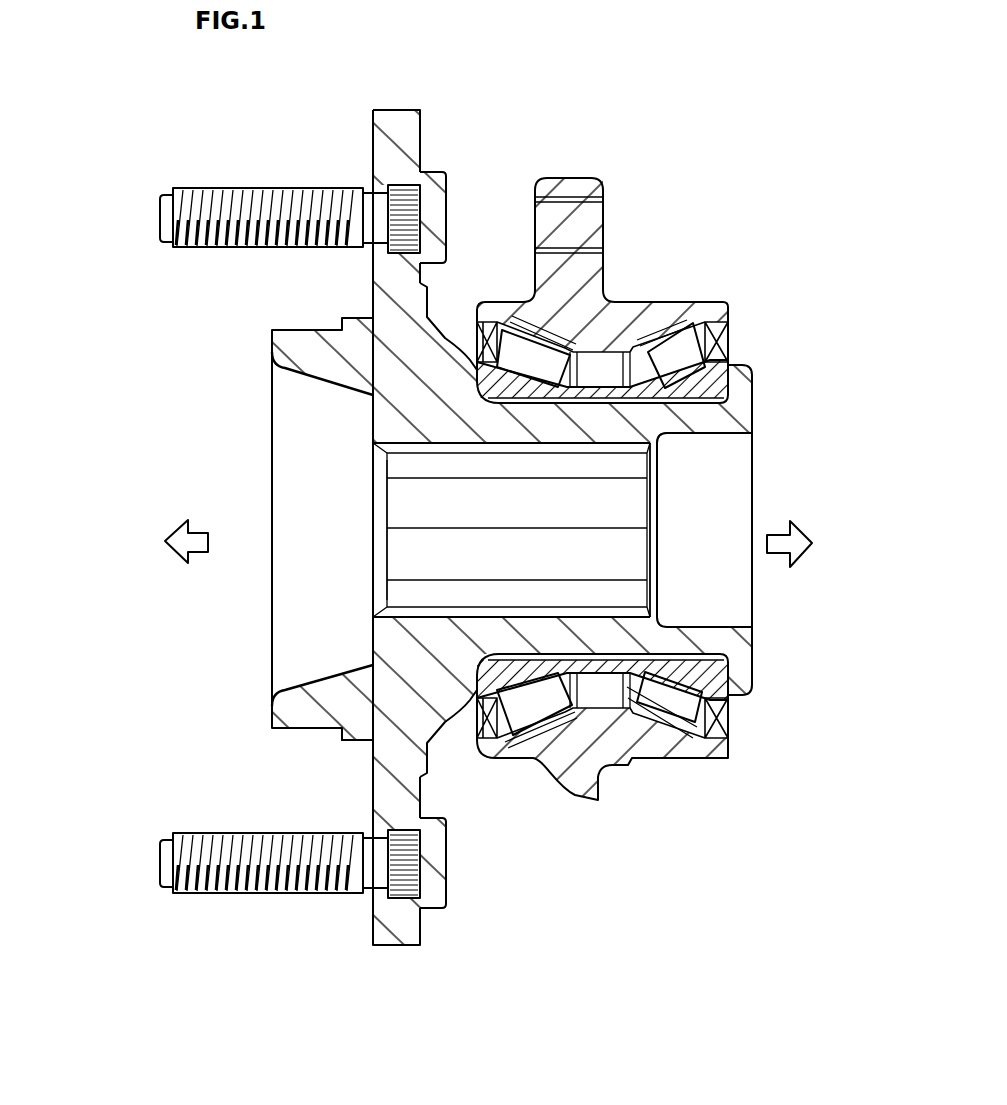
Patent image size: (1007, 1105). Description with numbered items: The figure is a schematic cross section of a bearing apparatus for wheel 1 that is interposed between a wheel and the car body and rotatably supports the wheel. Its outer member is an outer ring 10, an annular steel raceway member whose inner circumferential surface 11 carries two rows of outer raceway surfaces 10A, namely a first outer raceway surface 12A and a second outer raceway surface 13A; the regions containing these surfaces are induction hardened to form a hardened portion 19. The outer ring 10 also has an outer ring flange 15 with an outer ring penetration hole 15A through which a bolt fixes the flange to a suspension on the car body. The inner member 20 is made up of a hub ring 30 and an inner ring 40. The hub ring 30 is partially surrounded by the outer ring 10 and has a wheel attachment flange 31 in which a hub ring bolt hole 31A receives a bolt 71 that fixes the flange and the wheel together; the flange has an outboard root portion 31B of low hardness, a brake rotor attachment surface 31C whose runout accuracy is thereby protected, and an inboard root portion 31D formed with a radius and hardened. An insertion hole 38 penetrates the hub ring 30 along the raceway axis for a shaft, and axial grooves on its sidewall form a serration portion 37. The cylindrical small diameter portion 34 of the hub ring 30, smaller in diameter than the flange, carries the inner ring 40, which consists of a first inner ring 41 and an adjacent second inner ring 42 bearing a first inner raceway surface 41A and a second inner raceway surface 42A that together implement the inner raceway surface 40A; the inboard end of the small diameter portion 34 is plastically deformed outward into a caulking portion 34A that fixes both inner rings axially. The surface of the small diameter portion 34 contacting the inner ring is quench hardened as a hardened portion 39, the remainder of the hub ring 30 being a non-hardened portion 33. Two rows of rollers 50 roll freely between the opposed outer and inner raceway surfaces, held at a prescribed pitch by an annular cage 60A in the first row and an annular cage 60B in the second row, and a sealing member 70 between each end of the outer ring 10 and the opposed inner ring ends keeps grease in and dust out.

The bearing apparatus for wheel 1 is at (722, 200).
The outer ring 10 is at (713, 312).
The outer raceway surfaces 10A is at (607, 100).
The inner circumferential surface 11 is at (629, 300).
The first outer raceway surface 12A is at (566, 346).
The second outer raceway surface 13A is at (585, 348).
The outer ring flange 15 is at (571, 186).
The outer ring penetration hole 15A is at (603, 210).
The hardened portion 19 is at (548, 328).
The inner member 20 is at (178, 625).
The hub ring 30 is at (300, 712).
The wheel attachment flange 31 is at (397, 932).
The hub ring bolt hole 31A is at (422, 202).
The root portion 31B is at (373, 318).
The brake rotor attachment surface 31C is at (373, 128).
The root portion 31D is at (492, 742).
The non-hardened portion 33 is at (375, 712).
The small diameter portion 34 is at (565, 620).
The caulking portion 34A is at (735, 395).
The serration portion 37 is at (398, 540).
The insertion hole 38 is at (420, 445).
The hardened portion 39 is at (473, 356).
The inner ring 40 is at (221, 598).
The inner raceway surface 40A is at (803, 442).
The first inner ring 41 is at (480, 672).
The first inner raceway surface 41A is at (680, 458).
The second inner ring 42 is at (380, 622).
The second inner raceway surface 42A is at (662, 436).
The rollers 50 is at (550, 700).
The cage 60A is at (503, 322).
The cage 60B is at (692, 770).
The sealing member 70 is at (480, 352).
The bolt 71 is at (338, 198).